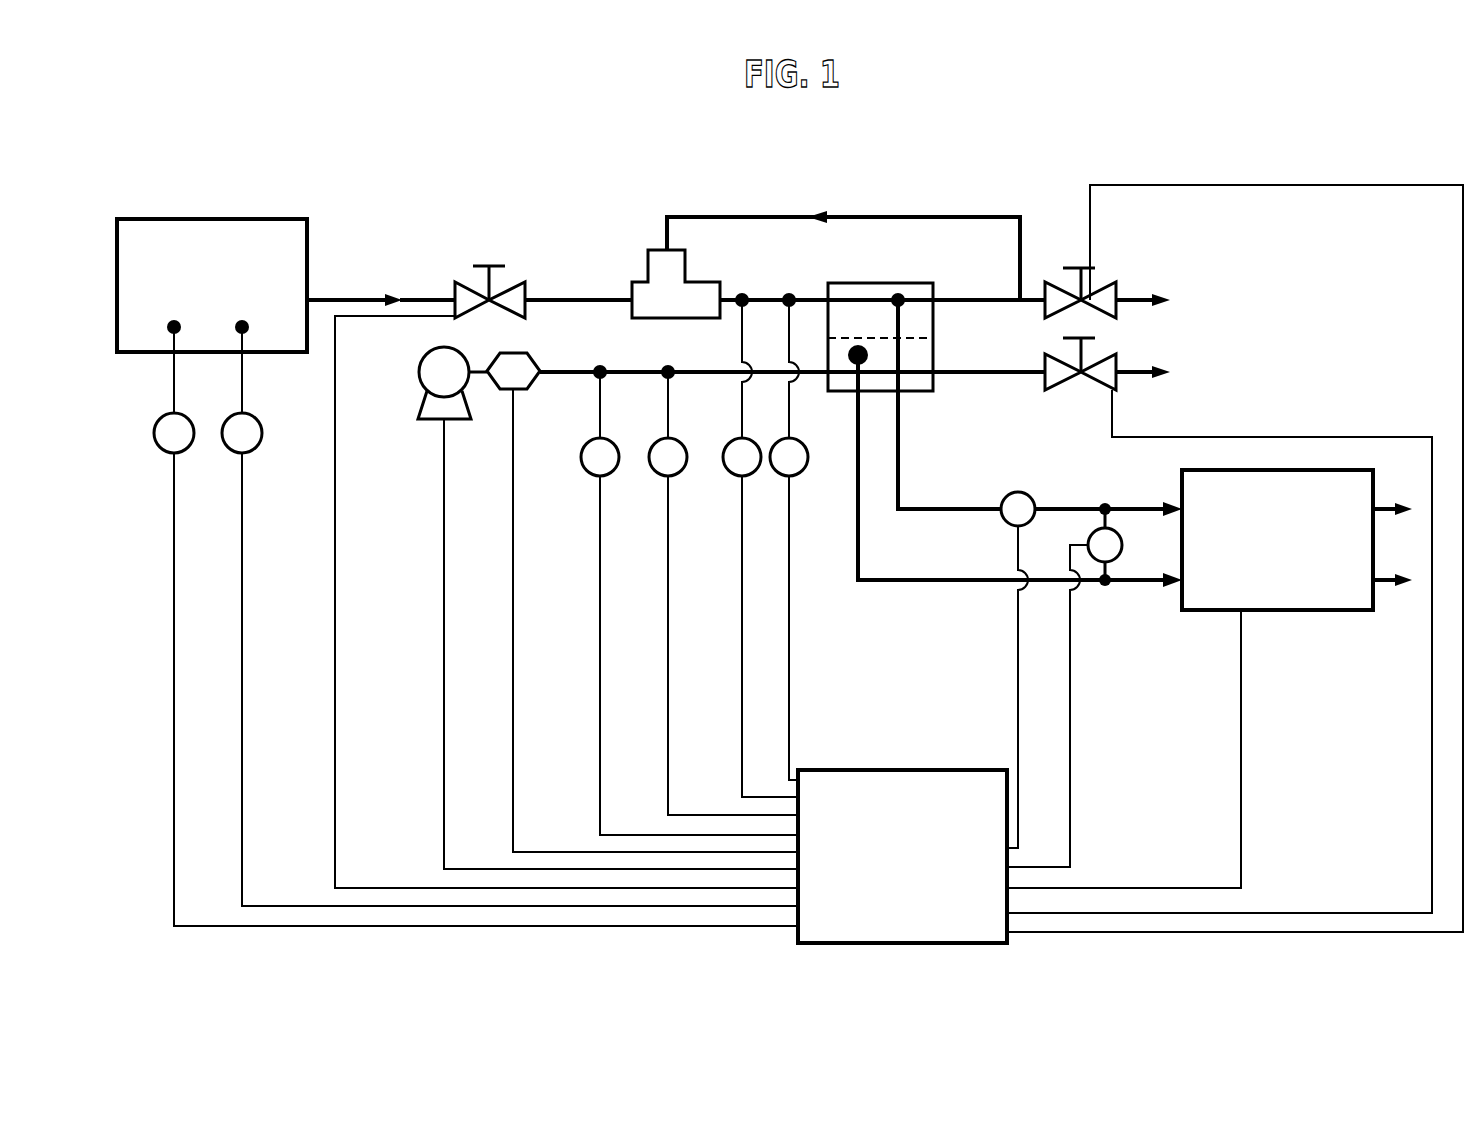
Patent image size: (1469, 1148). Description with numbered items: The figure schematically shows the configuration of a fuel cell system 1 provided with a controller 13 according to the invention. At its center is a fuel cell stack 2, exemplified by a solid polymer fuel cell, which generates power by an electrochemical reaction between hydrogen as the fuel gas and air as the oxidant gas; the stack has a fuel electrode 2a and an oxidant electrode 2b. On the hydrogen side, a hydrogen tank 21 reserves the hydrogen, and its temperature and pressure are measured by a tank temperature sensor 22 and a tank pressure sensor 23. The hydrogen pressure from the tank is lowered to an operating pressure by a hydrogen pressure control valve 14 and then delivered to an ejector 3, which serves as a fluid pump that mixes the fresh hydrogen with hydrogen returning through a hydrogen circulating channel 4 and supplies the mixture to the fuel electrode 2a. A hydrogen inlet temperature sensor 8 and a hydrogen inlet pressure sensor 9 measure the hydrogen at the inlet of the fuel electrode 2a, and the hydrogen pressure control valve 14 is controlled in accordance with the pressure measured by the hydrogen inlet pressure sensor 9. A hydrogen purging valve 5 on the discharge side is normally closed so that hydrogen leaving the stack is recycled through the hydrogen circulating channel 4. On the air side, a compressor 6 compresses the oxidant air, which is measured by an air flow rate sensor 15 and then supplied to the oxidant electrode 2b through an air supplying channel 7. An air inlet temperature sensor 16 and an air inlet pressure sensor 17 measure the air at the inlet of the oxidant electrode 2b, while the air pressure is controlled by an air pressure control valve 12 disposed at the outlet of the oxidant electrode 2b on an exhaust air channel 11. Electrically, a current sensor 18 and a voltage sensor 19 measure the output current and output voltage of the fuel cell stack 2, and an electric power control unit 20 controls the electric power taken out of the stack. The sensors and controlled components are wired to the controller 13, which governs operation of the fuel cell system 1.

The fuel cell system 1 is at (705, 180).
The fuel cell stack 2 is at (878, 252).
The fuel electrode 2a is at (898, 292).
The oxidant electrode 2b is at (935, 343).
The ejector 3 is at (660, 248).
The hydrogen circulating channel 4 is at (1000, 216).
The hydrogen purging valve 5 is at (1105, 288).
The compressor 6 is at (420, 407).
The air supplying channel 7 is at (708, 376).
The hydrogen inlet temperature sensor 8 is at (728, 471).
The hydrogen inlet pressure sensor 9 is at (802, 471).
The exhaust air channel 11 is at (998, 376).
The air pressure control valve 12 is at (1063, 390).
The controller 13 is at (893, 768).
The hydrogen pressure control valve 14 is at (489, 262).
The air flow rate sensor 15 is at (522, 392).
The air inlet temperature sensor 16 is at (585, 471).
The air inlet pressure sensor 17 is at (655, 471).
The current sensor 18 is at (1004, 497).
The voltage sensor 19 is at (1116, 532).
The electric power control unit 20 is at (1270, 612).
The hydrogen tank 21 is at (308, 238).
The tank temperature sensor 22 is at (166, 455).
The tank pressure sensor 23 is at (233, 455).